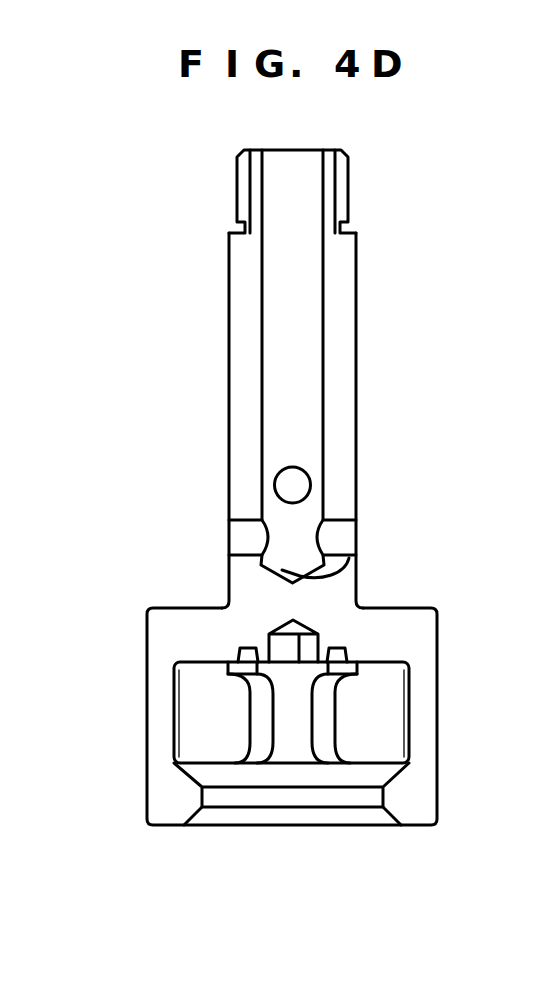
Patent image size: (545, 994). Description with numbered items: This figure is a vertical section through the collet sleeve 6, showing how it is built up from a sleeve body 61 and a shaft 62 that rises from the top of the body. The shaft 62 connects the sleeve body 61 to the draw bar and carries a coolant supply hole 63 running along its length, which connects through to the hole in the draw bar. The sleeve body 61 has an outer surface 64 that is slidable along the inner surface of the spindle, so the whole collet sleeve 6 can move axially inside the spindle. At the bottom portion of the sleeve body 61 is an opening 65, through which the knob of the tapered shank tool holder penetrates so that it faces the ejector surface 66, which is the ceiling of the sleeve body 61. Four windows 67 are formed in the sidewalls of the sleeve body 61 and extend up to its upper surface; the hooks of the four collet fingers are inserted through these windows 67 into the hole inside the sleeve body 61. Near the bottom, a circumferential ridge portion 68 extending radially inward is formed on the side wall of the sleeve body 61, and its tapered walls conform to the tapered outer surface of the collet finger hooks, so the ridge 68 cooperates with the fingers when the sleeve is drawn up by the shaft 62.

The collet sleeve 6 is at (363, 442).
The sleeve body 61 is at (457, 745).
The shaft 62 is at (357, 353).
The coolant supply hole 63 is at (272, 327).
The outer surface 64 is at (146, 645).
The opening 65 is at (350, 822).
The ejector surface 66 is at (323, 677).
The windows 67 is at (208, 707).
The circumferential ridge portion 68 is at (392, 797).